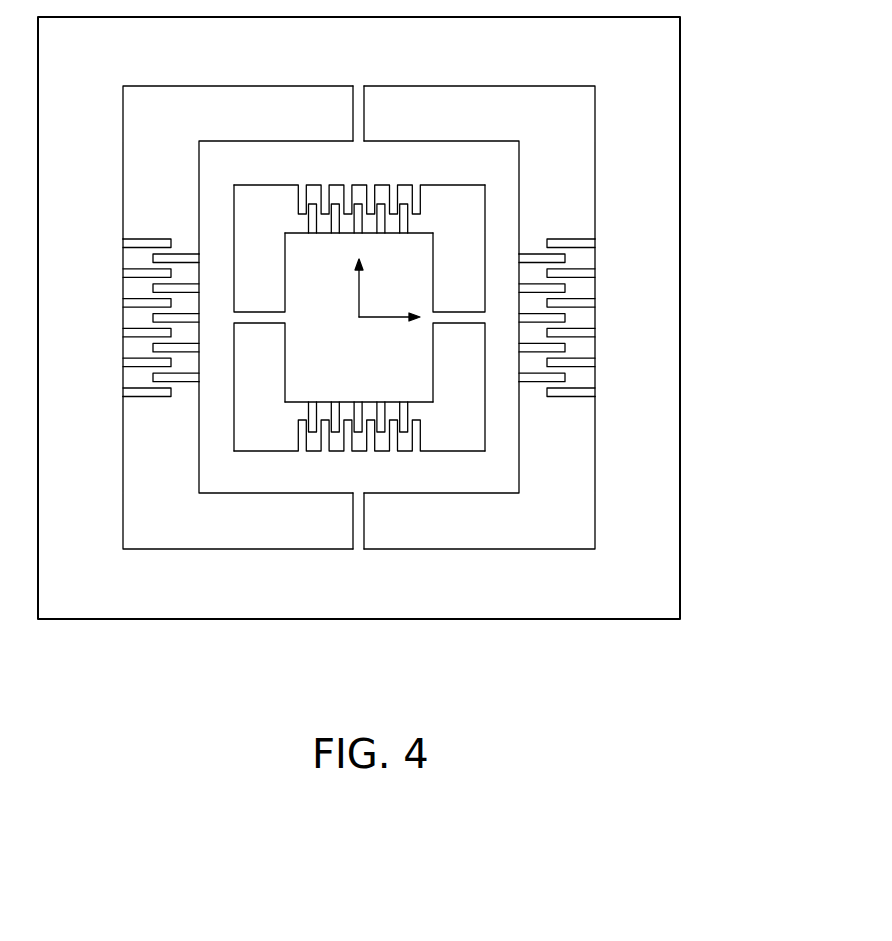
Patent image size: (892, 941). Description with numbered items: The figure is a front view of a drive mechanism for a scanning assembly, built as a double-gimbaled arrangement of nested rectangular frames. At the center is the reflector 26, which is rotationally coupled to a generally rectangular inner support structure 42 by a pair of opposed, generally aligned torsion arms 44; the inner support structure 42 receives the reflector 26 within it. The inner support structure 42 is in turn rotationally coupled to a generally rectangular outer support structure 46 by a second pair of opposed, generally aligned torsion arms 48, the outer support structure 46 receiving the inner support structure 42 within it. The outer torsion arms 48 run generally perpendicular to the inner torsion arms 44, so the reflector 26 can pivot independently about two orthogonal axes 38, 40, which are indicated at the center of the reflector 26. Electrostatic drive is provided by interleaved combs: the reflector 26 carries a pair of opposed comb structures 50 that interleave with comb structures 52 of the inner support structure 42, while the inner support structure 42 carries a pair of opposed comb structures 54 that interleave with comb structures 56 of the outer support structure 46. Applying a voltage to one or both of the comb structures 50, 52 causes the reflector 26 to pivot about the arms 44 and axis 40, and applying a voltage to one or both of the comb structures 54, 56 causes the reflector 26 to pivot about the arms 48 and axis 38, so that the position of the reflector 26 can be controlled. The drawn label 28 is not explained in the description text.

The reflector 26 is at (415, 386).
The proof mass (upper portion) 28 is at (397, 296).
The axis 38 is at (357, 283).
The axis 40 is at (393, 318).
The inner support structure 42 is at (418, 478).
The torsion arms 44 is at (257, 320).
The outer support structure 46 is at (672, 143).
The torsion arms 48 is at (362, 117).
The comb structures 50 is at (380, 216).
The comb structures 52 is at (413, 200).
The comb structures 54 is at (172, 255).
The comb structures 56 is at (147, 393).